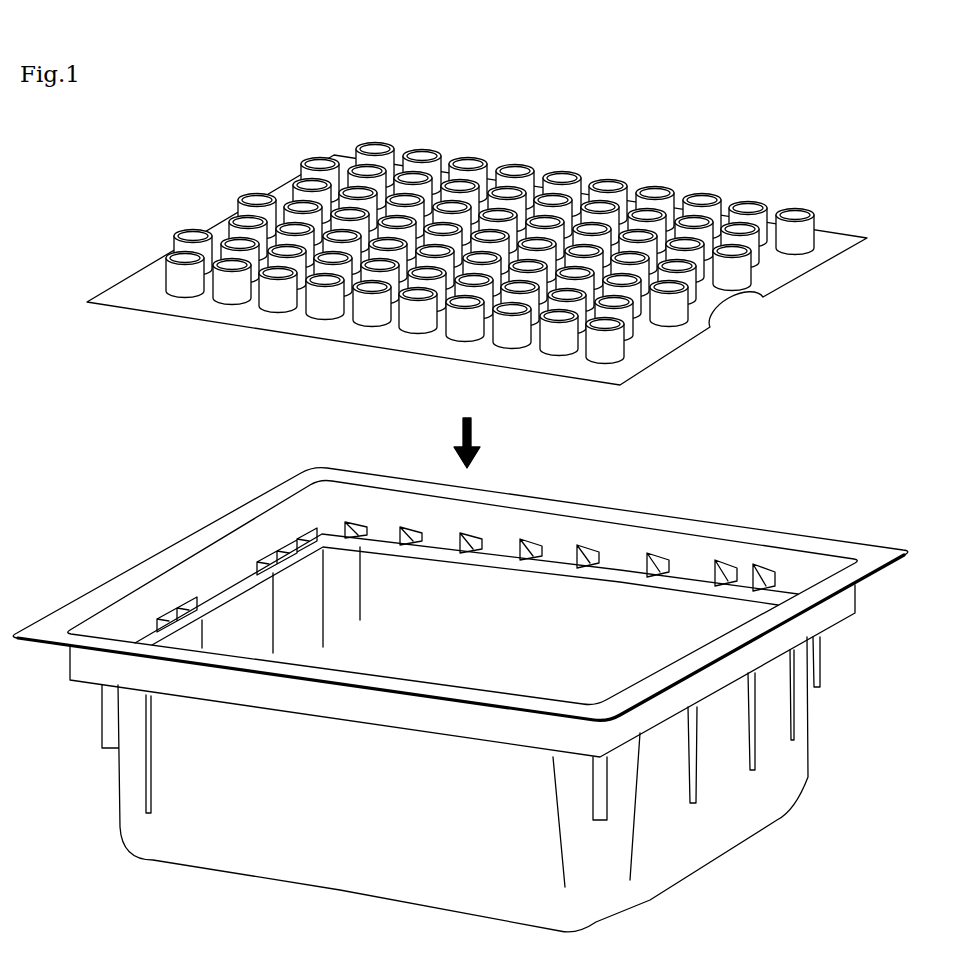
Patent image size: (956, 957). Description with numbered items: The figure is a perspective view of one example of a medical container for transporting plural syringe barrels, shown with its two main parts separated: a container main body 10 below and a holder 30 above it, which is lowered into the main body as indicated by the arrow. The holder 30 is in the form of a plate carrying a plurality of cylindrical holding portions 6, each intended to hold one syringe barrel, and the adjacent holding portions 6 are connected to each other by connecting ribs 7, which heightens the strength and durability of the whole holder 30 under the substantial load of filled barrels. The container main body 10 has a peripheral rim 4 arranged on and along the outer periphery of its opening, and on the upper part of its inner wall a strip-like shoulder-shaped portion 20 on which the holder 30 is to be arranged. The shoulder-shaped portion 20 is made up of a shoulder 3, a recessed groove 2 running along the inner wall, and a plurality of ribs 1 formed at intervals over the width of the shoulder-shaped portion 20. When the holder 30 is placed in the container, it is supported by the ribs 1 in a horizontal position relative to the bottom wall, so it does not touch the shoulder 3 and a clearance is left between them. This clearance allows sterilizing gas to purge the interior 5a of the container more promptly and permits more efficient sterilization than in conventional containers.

The holder 30 is at (477, 256).
The holding portion 6 is at (808, 228).
The connecting rib 7 is at (780, 256).
The main body of container 10 is at (460, 664).
The peripheral rim 4 is at (262, 505).
The interior of container 5a is at (460, 625).
The shoulder-shaped portion 20 is at (466, 520).
The rib 1 is at (620, 572).
The groove 2 is at (648, 582).
The shoulder 3 is at (693, 443).